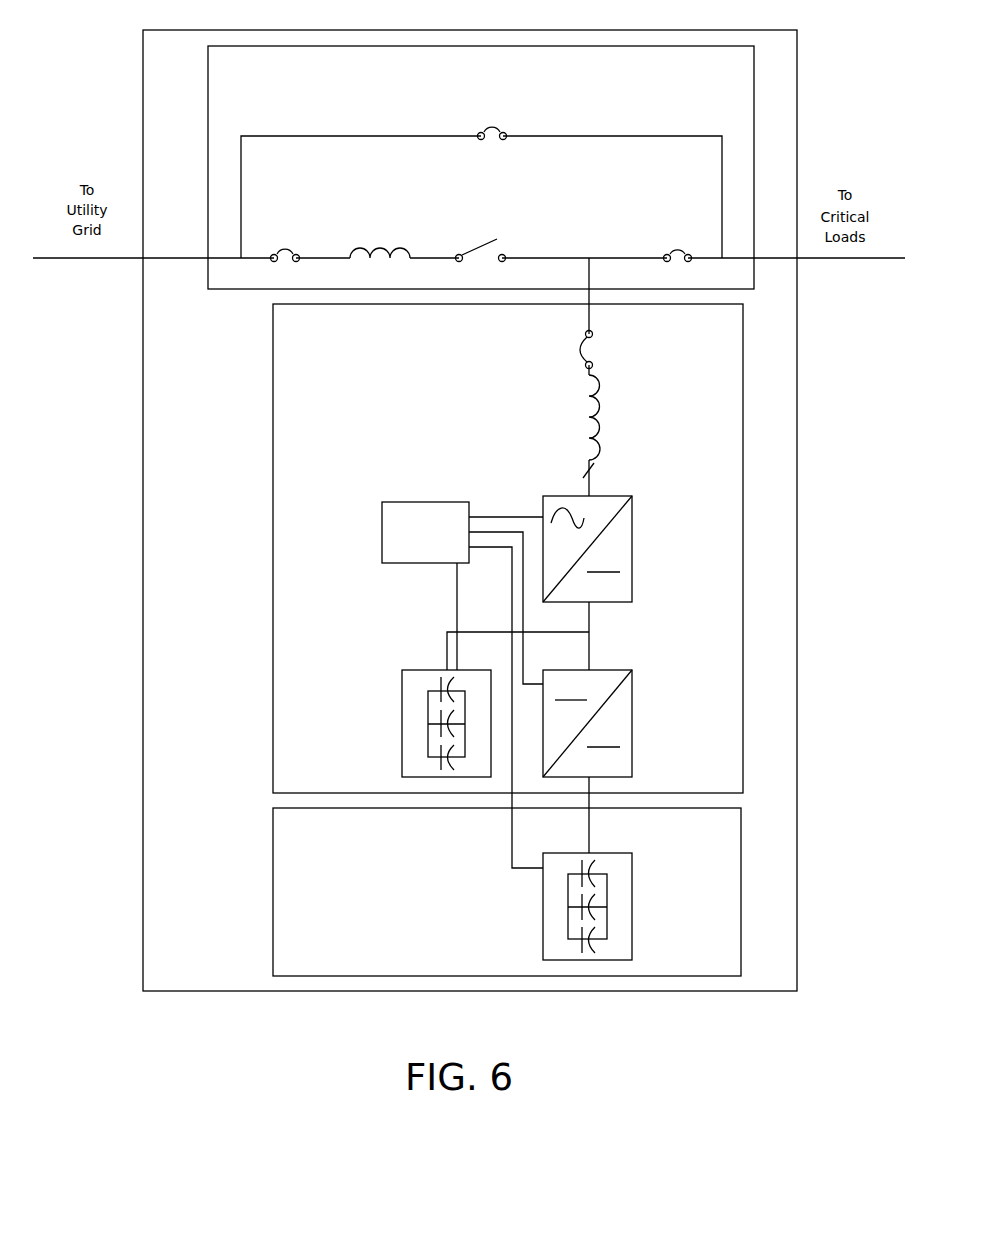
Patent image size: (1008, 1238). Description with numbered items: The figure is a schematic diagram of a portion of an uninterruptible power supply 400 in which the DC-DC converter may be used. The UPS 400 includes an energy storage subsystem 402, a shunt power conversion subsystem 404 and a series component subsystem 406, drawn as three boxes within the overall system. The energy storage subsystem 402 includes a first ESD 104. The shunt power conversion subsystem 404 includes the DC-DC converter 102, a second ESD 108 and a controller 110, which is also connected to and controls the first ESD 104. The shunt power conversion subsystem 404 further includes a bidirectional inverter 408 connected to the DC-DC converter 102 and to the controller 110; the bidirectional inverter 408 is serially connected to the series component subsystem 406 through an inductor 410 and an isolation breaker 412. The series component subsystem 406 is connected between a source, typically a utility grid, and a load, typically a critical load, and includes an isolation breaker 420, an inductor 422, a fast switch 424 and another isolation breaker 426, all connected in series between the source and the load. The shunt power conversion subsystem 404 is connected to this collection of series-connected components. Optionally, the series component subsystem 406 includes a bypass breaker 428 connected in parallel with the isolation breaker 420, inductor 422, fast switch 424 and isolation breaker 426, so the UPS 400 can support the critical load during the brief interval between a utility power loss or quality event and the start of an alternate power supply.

The uninterruptible power supply 400 is at (98, 507).
The energy storage subsystem 402 is at (741, 908).
The shunt power conversion subsystem 404 is at (743, 587).
The series component subsystem 406 is at (754, 185).
The bidirectional inverter 408 is at (632, 530).
The inductor 410 is at (596, 410).
The isolation breaker 412 is at (578, 355).
The isolation breaker 420 is at (288, 245).
The inductor 422 is at (388, 250).
The fast switch 424 is at (480, 238).
The isolation breaker 426 is at (680, 240).
The bypass breaker 428 is at (500, 121).
The controller 110 is at (408, 502).
The second ESD 108 is at (402, 705).
The DC-DC converter 102 is at (632, 721).
The first ESD 104 is at (632, 923).